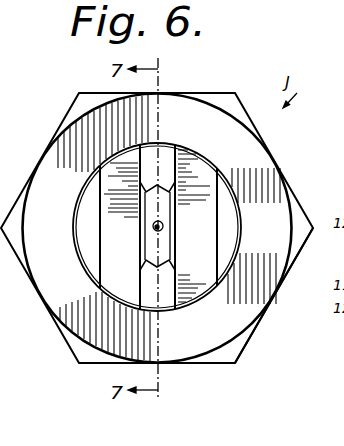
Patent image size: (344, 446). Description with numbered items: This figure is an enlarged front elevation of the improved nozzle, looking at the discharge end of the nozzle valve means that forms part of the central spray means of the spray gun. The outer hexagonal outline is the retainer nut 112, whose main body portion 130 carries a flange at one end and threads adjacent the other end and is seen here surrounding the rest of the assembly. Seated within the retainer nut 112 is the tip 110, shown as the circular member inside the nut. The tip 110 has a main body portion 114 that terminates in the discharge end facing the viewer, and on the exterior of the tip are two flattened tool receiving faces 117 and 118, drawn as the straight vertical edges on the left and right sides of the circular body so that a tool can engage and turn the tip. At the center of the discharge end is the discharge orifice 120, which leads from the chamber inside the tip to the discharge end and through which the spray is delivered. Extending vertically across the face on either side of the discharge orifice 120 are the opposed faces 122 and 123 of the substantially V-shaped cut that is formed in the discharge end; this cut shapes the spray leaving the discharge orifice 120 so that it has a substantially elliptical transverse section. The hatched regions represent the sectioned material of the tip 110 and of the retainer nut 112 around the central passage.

The tip 110 is at (206, 130).
The retainer nut 112 is at (271, 152).
The main body portion 114 is at (205, 174).
The exterior flattened tool receiving face 117 is at (92, 228).
The exterior flattened tool receiving face 118 is at (225, 231).
The discharge orifice 120 is at (166, 223).
The opposed face 122 is at (151, 244).
The opposed face 123 is at (163, 247).
The main body portion 130 is at (258, 315).